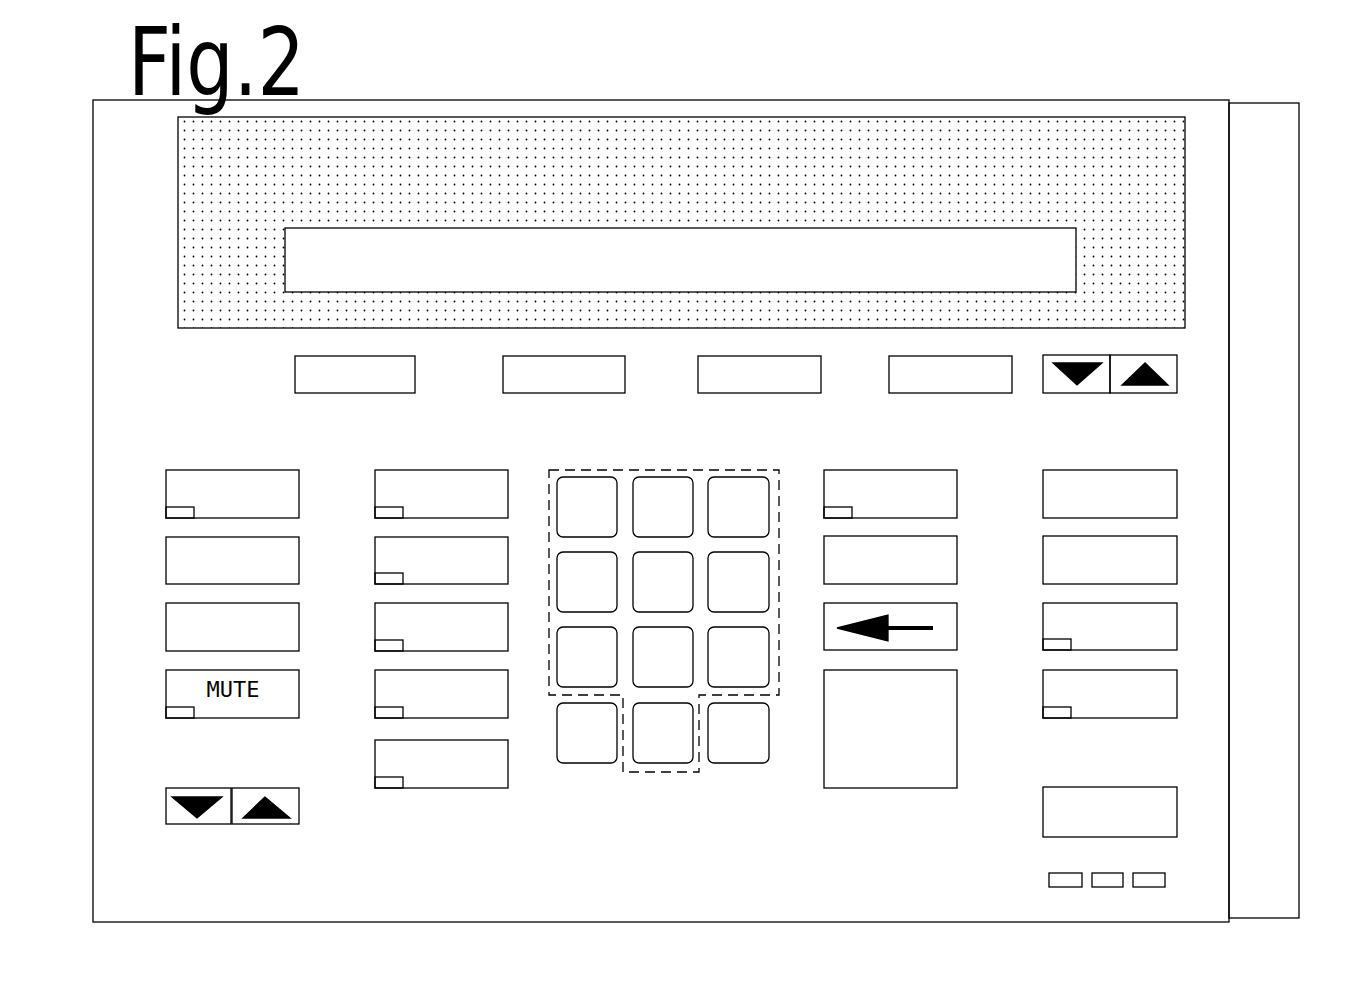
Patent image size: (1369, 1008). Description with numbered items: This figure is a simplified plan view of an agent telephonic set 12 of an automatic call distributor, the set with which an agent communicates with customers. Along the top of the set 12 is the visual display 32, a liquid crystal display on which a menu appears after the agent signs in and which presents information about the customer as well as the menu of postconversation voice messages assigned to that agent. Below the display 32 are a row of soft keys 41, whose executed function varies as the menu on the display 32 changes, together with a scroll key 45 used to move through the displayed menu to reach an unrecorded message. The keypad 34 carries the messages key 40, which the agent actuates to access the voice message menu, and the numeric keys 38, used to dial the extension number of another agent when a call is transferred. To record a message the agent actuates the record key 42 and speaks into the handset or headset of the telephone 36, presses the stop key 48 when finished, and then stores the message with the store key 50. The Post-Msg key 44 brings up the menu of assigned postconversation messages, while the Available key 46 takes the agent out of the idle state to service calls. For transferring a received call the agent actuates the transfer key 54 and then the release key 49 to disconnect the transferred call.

The agent telephonic set 12 is at (932, 86).
The visual display 32 is at (1060, 275).
The keypad 34 is at (1150, 448).
The telephone 36 is at (1285, 507).
The numeric keys 38 is at (640, 470).
The messages key 40 is at (392, 472).
The soft keys 41 is at (402, 380).
The record key 42 is at (175, 486).
The Post-Msg key 44 is at (868, 470).
The scroll key 45 is at (1155, 360).
The Available key 46 is at (1148, 648).
The stop key 48 is at (175, 552).
The release key 49 is at (1143, 787).
The store key 50 is at (175, 639).
The transfer key 54 is at (1148, 580).